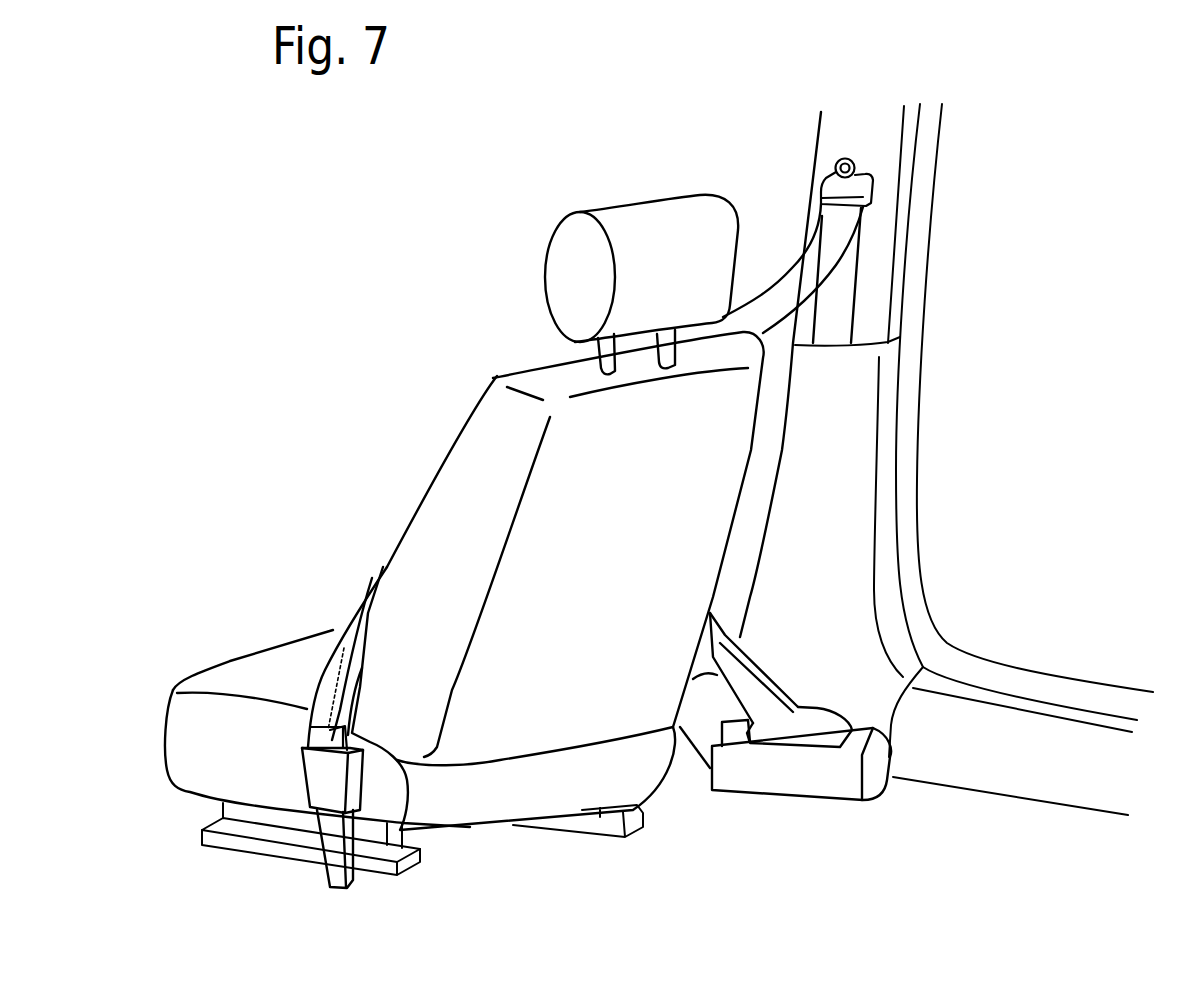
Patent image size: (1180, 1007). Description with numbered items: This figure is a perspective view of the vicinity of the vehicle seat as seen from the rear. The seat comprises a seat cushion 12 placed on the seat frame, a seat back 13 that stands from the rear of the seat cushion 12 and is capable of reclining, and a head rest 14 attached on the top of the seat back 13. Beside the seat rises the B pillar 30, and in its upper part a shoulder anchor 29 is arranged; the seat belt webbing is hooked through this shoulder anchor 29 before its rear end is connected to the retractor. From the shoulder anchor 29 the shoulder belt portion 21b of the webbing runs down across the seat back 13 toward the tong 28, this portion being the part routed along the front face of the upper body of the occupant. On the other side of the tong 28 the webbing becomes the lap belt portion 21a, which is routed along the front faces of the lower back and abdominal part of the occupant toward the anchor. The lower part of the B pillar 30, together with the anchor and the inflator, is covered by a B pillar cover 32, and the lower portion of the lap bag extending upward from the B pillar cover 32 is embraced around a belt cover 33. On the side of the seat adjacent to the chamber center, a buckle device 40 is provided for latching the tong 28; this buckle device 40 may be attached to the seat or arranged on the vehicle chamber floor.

The seat cushion 12 is at (250, 672).
The seat back 13 is at (483, 437).
The head rest 14 is at (565, 262).
The lap belt portion 21a is at (353, 690).
The shoulder belt portion 21b is at (776, 307).
The tong 28 is at (308, 734).
The shoulder anchor 29 is at (833, 186).
The B pillar 30 is at (878, 140).
The B pillar cover 32 is at (735, 778).
The belt cover 33 is at (742, 688).
The buckle device 40 is at (300, 775).